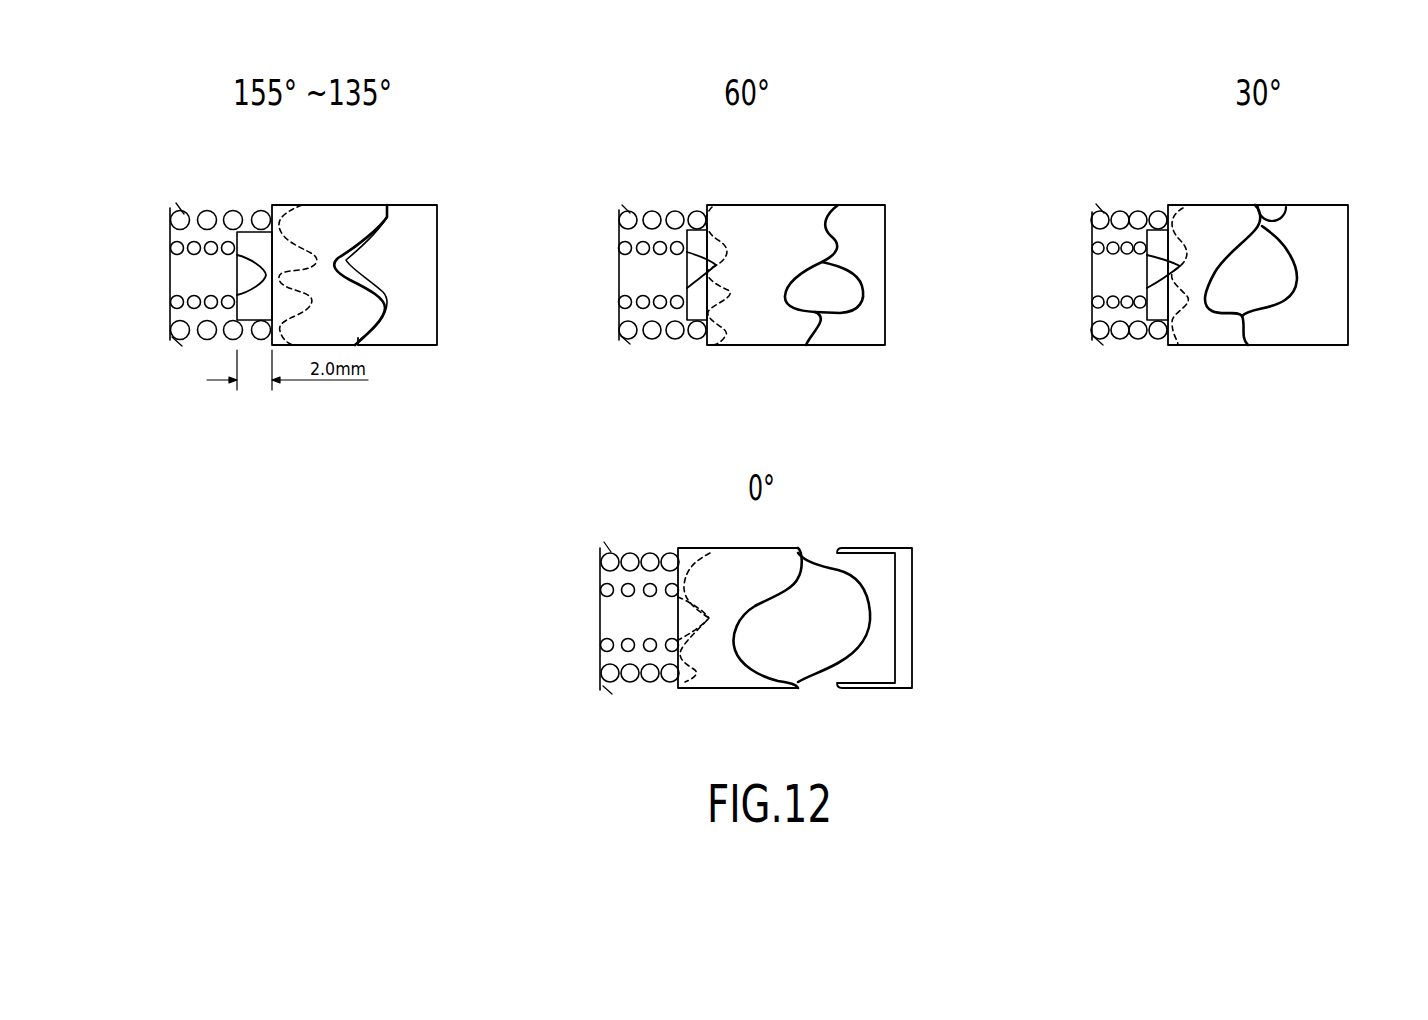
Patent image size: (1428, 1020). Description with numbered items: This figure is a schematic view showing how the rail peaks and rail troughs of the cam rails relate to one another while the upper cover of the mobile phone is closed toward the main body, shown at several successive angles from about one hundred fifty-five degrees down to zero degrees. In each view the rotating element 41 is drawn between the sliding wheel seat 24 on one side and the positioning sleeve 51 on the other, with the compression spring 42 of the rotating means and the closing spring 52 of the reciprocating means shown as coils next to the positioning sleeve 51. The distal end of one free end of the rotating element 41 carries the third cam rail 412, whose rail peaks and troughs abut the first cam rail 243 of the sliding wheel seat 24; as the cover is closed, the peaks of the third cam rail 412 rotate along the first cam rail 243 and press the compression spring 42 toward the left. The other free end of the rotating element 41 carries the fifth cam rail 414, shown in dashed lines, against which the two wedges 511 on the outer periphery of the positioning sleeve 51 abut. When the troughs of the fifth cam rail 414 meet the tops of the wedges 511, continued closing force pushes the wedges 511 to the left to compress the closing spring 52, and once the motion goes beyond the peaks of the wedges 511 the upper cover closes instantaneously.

The sliding wheel seat 24 is at (398, 340).
The first cam rail 243 is at (830, 275).
The rotating element 41 is at (364, 210).
The third cam rail 412 is at (378, 237).
The fifth cam rail 414 is at (299, 236).
The compression spring 42 is at (183, 215).
The positioning sleeve 51 is at (243, 312).
The wedge 511 is at (240, 272).
The closing spring 52 is at (178, 246).